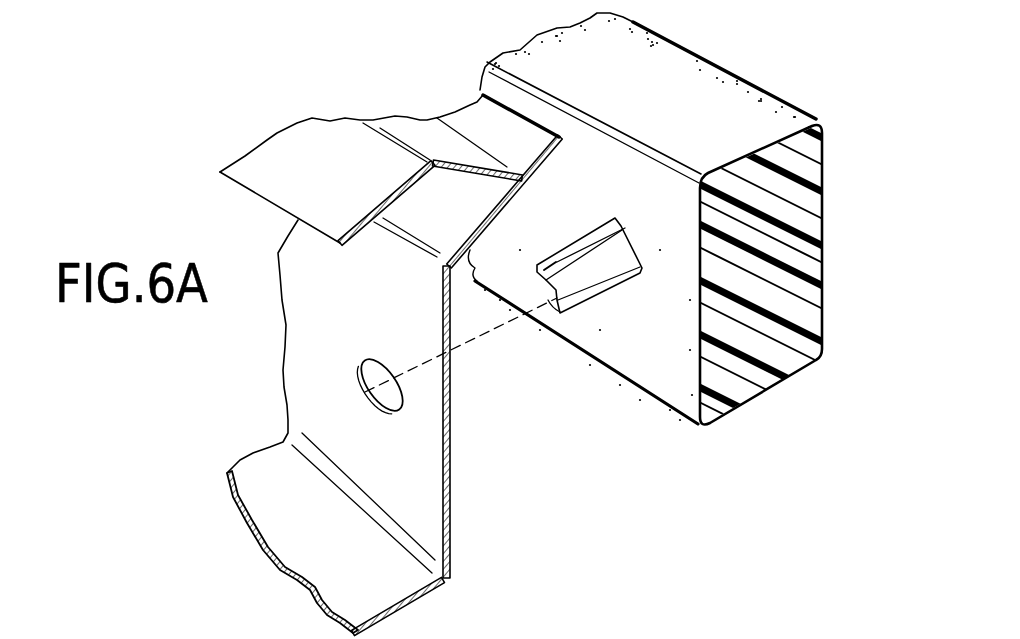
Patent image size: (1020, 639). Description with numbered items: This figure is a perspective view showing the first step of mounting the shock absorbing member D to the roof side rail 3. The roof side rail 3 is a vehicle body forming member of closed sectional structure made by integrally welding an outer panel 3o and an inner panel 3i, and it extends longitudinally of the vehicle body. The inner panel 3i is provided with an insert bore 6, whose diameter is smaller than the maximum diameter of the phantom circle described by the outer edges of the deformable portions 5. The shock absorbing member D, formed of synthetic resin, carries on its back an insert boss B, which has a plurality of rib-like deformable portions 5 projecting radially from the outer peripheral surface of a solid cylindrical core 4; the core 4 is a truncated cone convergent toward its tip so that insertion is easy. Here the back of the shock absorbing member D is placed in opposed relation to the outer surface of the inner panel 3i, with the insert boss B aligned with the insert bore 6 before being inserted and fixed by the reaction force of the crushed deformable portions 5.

The roof side rail 3 is at (391, 338).
The outer panel 3o is at (358, 120).
The inner panel 3i is at (451, 473).
The solid cylindrical core 4 is at (548, 302).
The rib-like deformable portions 5 is at (622, 228).
The insert bore 6 is at (386, 410).
The insert boss B is at (592, 307).
The shock absorbing member D is at (678, 240).